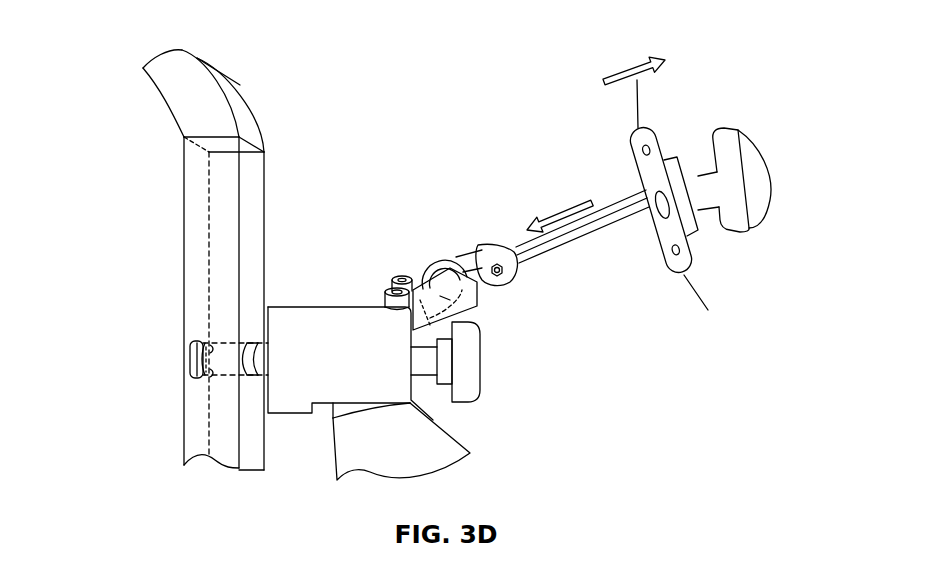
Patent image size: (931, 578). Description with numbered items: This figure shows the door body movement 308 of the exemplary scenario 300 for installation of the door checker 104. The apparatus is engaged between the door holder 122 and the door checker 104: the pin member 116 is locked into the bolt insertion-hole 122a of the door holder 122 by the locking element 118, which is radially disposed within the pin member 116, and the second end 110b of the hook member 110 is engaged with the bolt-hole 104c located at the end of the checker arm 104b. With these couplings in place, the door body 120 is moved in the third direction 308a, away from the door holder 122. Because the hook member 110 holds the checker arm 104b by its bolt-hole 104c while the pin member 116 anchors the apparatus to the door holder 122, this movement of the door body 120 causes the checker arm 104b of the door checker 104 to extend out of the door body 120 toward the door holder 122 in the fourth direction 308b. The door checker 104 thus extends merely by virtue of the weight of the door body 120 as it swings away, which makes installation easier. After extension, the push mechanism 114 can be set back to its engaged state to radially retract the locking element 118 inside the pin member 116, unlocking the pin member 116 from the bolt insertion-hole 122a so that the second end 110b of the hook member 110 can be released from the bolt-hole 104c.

The exemplary scenario 300 is at (120, 68).
The door holder 122 is at (254, 192).
The bolt insertion-hole 122a is at (198, 378).
The locking element 118 is at (210, 384).
The pin member 116 is at (257, 352).
The push mechanism 114 is at (491, 374).
The hook member 110 is at (425, 268).
The second end 110b is at (406, 280).
The door checker 104 is at (738, 120).
The checker arm 104b is at (607, 230).
The bolt-hole 104c is at (452, 275).
The door body 120 is at (638, 114).
The door body movement 308 is at (398, 176).
The third direction 308a is at (626, 66).
The fourth direction 308b is at (566, 213).